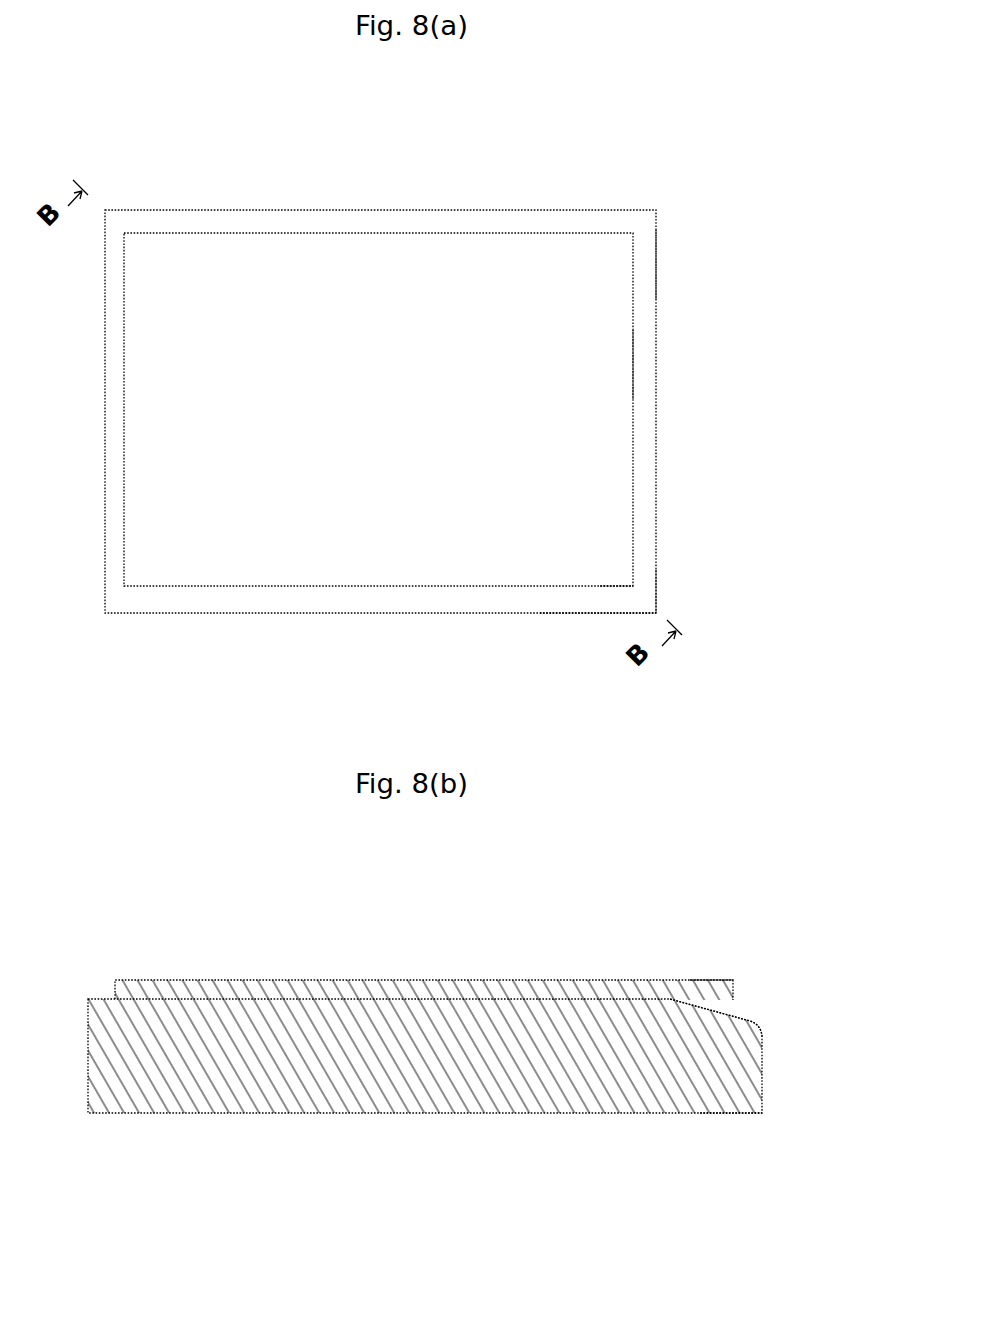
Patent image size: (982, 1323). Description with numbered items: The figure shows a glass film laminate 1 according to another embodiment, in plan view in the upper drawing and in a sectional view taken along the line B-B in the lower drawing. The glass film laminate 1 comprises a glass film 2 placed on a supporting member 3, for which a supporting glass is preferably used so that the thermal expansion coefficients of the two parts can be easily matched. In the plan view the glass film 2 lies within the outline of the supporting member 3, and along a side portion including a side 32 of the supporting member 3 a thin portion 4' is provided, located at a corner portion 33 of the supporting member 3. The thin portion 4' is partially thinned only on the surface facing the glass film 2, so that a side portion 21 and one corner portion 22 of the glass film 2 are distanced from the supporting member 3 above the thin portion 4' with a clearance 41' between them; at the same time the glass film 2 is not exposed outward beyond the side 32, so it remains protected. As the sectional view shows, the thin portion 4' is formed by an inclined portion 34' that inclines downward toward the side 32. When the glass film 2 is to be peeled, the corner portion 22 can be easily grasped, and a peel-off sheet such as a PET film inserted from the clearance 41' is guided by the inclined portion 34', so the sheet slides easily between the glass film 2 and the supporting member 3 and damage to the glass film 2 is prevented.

In FIG. 8A, the glass film laminate 1 is at (652, 157).
In FIG. 8B, the glass film laminate 1 is at (742, 919).
In FIG. 8A, the glass film 2 is at (215, 252).
In FIG. 8B, the glass film 2 is at (262, 990).
In FIG. 8A, the supporting member 3 is at (283, 602).
In FIG. 8B, the supporting member 3 is at (397, 1096).
In FIG. 8A, the side portion of the glass film 21 is at (634, 365).
In FIG. 8A, the corner portion of the glass film 22 is at (622, 585).
In FIG. 8A, the side of the supporting member 32 is at (656, 265).
In FIG. 8A, the corner portion of the supporting member 33 is at (648, 605).
In FIG. 8A, the thin portion 4' is at (662, 529).
In FIG. 8B, the thin portion 4' is at (767, 1139).
In FIG. 8B, the clearance 41' is at (654, 907).
In FIG. 8B, the inclined portion 34' is at (779, 993).